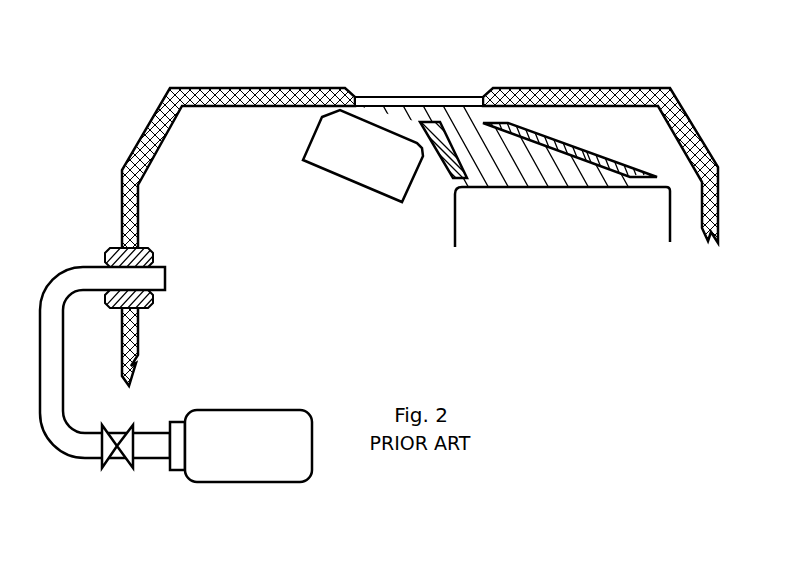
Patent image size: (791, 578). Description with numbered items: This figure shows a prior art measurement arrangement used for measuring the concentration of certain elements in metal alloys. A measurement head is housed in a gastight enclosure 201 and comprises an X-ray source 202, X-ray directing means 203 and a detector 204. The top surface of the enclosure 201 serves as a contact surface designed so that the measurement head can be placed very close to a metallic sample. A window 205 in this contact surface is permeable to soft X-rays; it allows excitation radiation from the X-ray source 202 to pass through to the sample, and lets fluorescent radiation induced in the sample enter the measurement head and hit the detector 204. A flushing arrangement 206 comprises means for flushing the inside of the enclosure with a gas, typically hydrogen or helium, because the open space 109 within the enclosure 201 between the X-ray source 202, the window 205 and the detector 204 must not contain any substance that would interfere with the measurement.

The gastight enclosure 201 is at (642, 88).
The X-ray source 202 is at (672, 223).
The X-ray directing means 203 is at (450, 172).
The detector 204 is at (345, 180).
The window 205 is at (437, 97).
The open space 109 is at (394, 97).
The flushing arrangement 206 is at (85, 459).